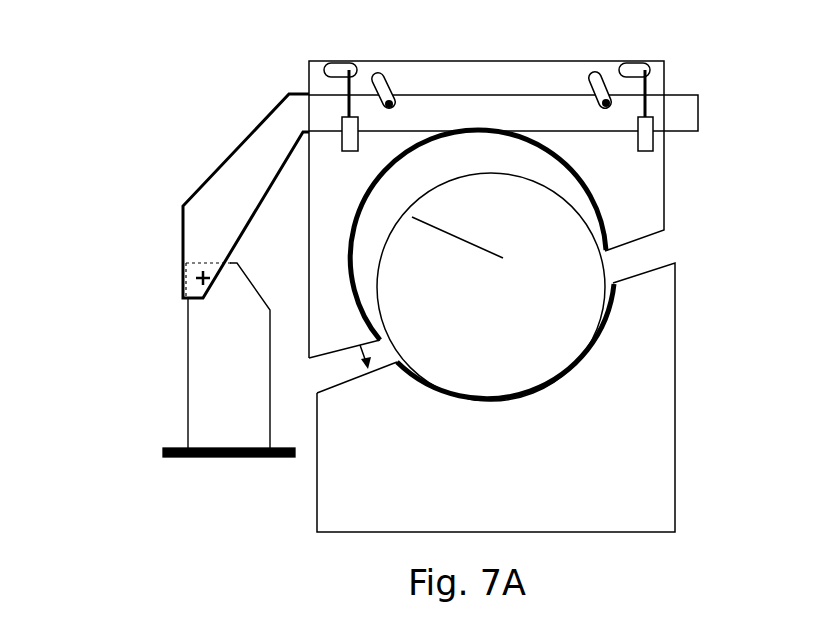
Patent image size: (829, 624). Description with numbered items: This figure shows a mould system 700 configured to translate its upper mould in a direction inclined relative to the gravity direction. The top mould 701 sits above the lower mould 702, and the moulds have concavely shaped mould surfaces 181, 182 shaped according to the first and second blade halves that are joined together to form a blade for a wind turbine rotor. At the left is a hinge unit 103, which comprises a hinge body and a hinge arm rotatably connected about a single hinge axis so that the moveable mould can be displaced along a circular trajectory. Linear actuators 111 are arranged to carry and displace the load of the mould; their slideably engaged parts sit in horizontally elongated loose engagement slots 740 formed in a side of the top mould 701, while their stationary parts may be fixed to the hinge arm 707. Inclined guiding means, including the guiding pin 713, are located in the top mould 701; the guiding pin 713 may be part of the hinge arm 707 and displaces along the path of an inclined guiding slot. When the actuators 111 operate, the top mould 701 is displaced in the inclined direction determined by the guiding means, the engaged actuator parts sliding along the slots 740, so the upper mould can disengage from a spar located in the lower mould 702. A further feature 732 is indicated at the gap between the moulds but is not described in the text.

The mould system 700 is at (115, 78).
The top mould 701 is at (305, 68).
The lower mould 702 is at (317, 504).
The hinge arm 707 is at (703, 107).
The loose engagement slot 740 is at (342, 65).
The guiding pin 713 is at (392, 83).
The linear actuator 111 is at (638, 152).
The mould surface 181 is at (563, 168).
The mould surface 182 is at (605, 340).
The channel opening 732 is at (357, 361).
The hinge unit 103 is at (188, 175).